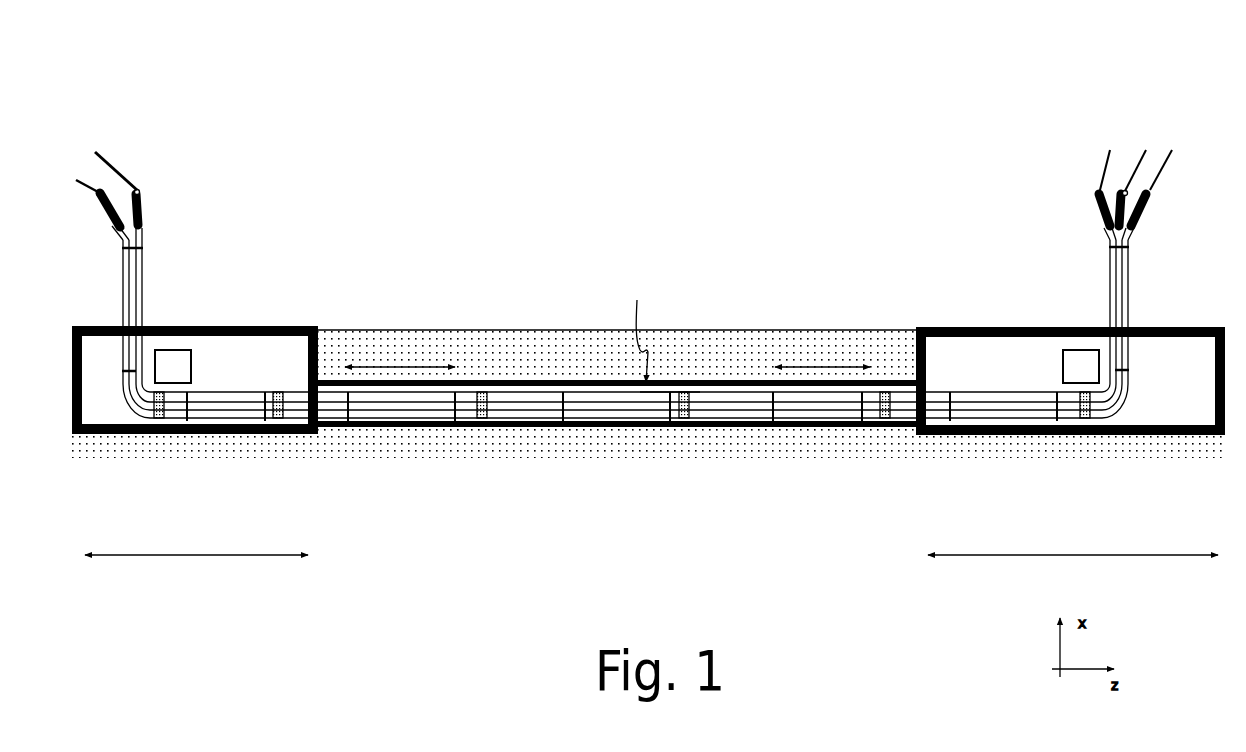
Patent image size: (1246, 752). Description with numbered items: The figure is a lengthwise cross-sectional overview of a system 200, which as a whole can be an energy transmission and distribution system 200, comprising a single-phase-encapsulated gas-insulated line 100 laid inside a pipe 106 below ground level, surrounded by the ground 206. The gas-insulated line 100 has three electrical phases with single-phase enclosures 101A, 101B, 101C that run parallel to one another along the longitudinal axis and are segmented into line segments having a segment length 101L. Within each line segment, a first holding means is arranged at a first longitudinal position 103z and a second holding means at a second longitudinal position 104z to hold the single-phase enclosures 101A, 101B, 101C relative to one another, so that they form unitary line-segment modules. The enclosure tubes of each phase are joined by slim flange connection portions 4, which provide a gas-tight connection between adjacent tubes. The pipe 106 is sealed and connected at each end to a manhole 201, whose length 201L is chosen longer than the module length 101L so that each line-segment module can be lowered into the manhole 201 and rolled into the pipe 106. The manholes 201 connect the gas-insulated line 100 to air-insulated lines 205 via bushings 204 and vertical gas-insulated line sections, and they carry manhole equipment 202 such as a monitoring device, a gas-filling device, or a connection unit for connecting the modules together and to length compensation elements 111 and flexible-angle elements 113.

The system 200 is at (308, 139).
The manhole 201 is at (265, 325).
The manhole equipment 202 is at (155, 367).
The bushing 204 is at (143, 212).
The air-insulated line 205 is at (128, 176).
The backfill / ground 206 is at (428, 329).
The gas-insulated line 100 is at (616, 279).
The pipe 106 is at (537, 382).
The flexible-angle element 113 is at (688, 382).
The length compensation element 111 is at (159, 429).
The first longitudinal position 103z is at (188, 430).
The second longitudinal position 104z is at (277, 430).
The connection portion 4 is at (285, 426).
The single-phase enclosure 101A is at (401, 402).
The single-phase enclosure 101B is at (628, 407).
The single-phase enclosure 101C is at (628, 407).
The segment length 101L is at (607, 356).
The manhole length 201L is at (651, 544).